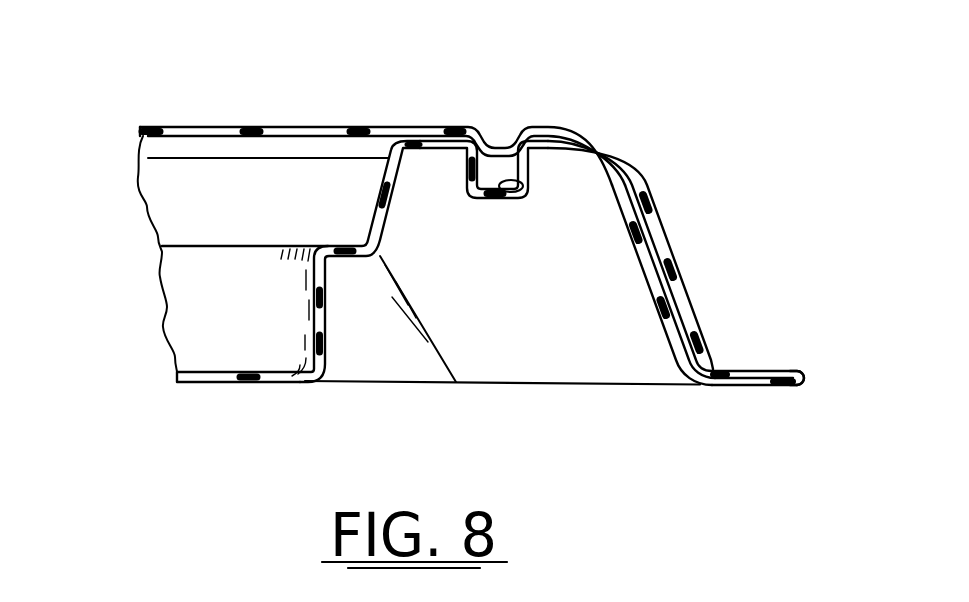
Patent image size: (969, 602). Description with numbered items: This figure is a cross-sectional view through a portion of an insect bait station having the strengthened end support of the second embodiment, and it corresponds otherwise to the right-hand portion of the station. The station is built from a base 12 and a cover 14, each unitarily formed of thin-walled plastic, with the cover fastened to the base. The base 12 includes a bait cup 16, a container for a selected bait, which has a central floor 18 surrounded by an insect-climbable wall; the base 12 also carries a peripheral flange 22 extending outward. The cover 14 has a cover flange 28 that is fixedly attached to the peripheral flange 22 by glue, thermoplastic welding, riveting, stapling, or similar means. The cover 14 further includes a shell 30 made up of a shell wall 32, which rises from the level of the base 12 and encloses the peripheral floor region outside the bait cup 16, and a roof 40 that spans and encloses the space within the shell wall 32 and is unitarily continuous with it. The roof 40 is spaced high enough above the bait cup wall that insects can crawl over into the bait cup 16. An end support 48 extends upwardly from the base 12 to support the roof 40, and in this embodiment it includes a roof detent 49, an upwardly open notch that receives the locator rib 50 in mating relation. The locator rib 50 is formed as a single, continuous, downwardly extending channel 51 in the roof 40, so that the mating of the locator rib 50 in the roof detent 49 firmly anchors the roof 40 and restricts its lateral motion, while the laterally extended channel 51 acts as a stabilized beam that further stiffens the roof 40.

The base 12 is at (738, 387).
The cover 14 is at (740, 370).
The bait cup 16 is at (315, 314).
The central floor 18 is at (203, 372).
The peripheral flange 22 is at (782, 387).
The cover flange 28 is at (780, 372).
The shell 30 is at (581, 145).
The shell wall 32 is at (669, 253).
The roof 40 is at (244, 127).
The end support 48 is at (660, 313).
The roof detent 49 is at (523, 181).
The locator rib 50 is at (492, 146).
The channel 51 is at (207, 157).